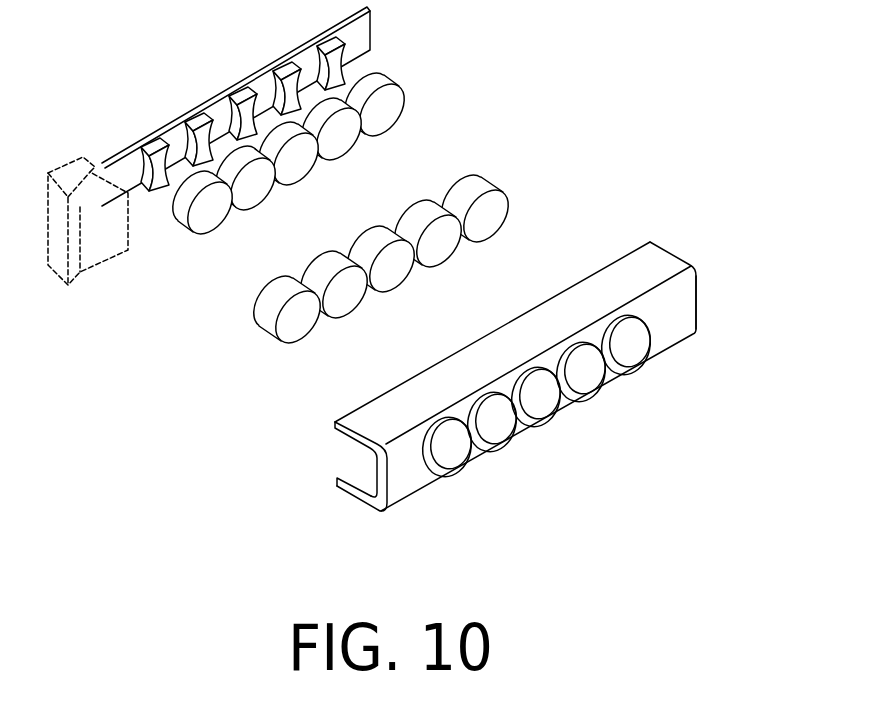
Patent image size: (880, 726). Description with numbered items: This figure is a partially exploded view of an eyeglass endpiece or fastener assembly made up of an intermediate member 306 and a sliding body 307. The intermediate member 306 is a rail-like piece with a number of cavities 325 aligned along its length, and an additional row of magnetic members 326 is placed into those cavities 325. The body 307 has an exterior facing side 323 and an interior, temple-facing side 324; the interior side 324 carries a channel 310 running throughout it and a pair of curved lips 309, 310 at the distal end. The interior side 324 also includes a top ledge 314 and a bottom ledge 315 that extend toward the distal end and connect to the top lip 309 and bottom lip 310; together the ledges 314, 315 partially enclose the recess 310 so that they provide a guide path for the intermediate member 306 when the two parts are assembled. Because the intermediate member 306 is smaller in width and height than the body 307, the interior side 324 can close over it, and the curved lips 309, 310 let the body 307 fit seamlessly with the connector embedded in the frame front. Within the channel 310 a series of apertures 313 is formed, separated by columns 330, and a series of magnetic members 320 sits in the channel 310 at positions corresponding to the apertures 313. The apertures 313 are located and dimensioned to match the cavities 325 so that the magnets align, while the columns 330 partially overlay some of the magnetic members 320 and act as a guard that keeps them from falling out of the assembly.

The intermediate member 306 is at (355, 38).
The body 307 is at (610, 277).
The curved lip 309 is at (372, 418).
The channel 310 is at (350, 481).
The apertures 313 is at (643, 349).
The top ledge 314 is at (573, 302).
The bottom ledge 315 is at (360, 476).
The magnetic members 320 is at (345, 295).
The exterior facing side 323 is at (678, 313).
The interior side 324 is at (373, 507).
The cavities 325 is at (217, 133).
The magnetic members 326 is at (343, 145).
The columns 330 is at (470, 428).